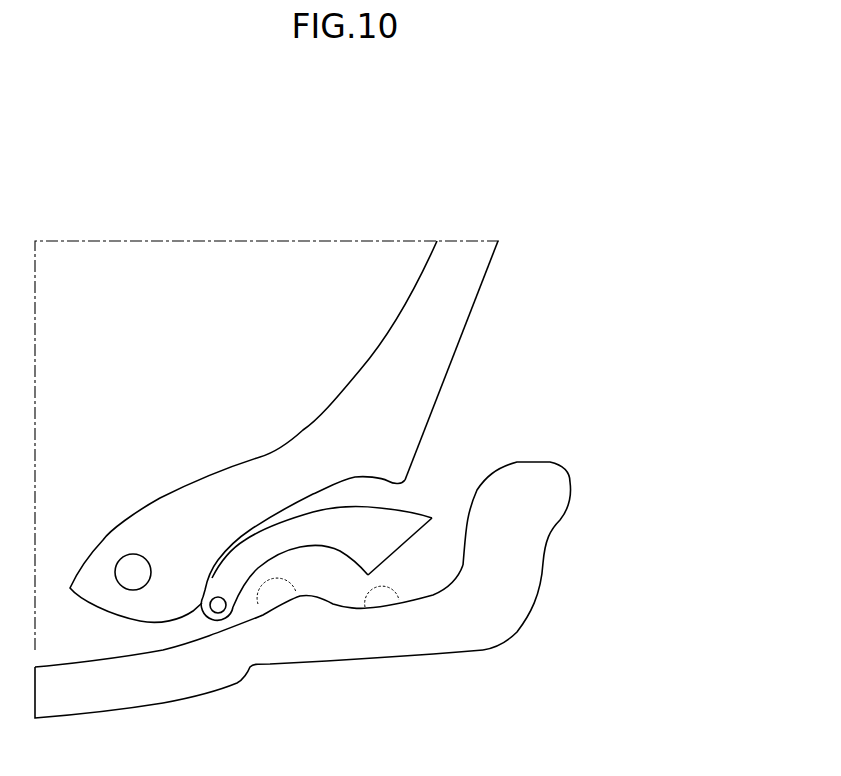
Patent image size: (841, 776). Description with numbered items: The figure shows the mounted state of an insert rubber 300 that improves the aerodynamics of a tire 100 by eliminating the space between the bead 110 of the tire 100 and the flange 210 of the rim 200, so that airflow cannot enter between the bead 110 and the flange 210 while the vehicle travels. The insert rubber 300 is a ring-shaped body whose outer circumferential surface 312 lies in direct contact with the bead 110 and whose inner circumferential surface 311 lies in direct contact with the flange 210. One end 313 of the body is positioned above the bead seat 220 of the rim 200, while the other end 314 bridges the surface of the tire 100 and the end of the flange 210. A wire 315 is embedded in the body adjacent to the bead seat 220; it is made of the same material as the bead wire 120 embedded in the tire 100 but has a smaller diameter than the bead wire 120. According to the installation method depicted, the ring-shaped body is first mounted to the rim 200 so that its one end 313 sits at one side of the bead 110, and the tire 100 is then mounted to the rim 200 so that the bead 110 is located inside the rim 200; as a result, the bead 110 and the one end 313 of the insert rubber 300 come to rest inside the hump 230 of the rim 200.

The tire 100 is at (480, 319).
The bead 110 is at (307, 455).
The bead wire 120 is at (128, 556).
The rim 200 is at (355, 604).
The flange 210 is at (558, 493).
The bead seat 220 is at (365, 607).
The hump 230 is at (258, 604).
The insert rubber 300 is at (379, 585).
The inner circumferential surface 311 is at (330, 557).
The outer circumferential surface 312 is at (290, 513).
The one end 313 is at (208, 620).
The other end 314 is at (405, 549).
The wire 315 is at (226, 614).